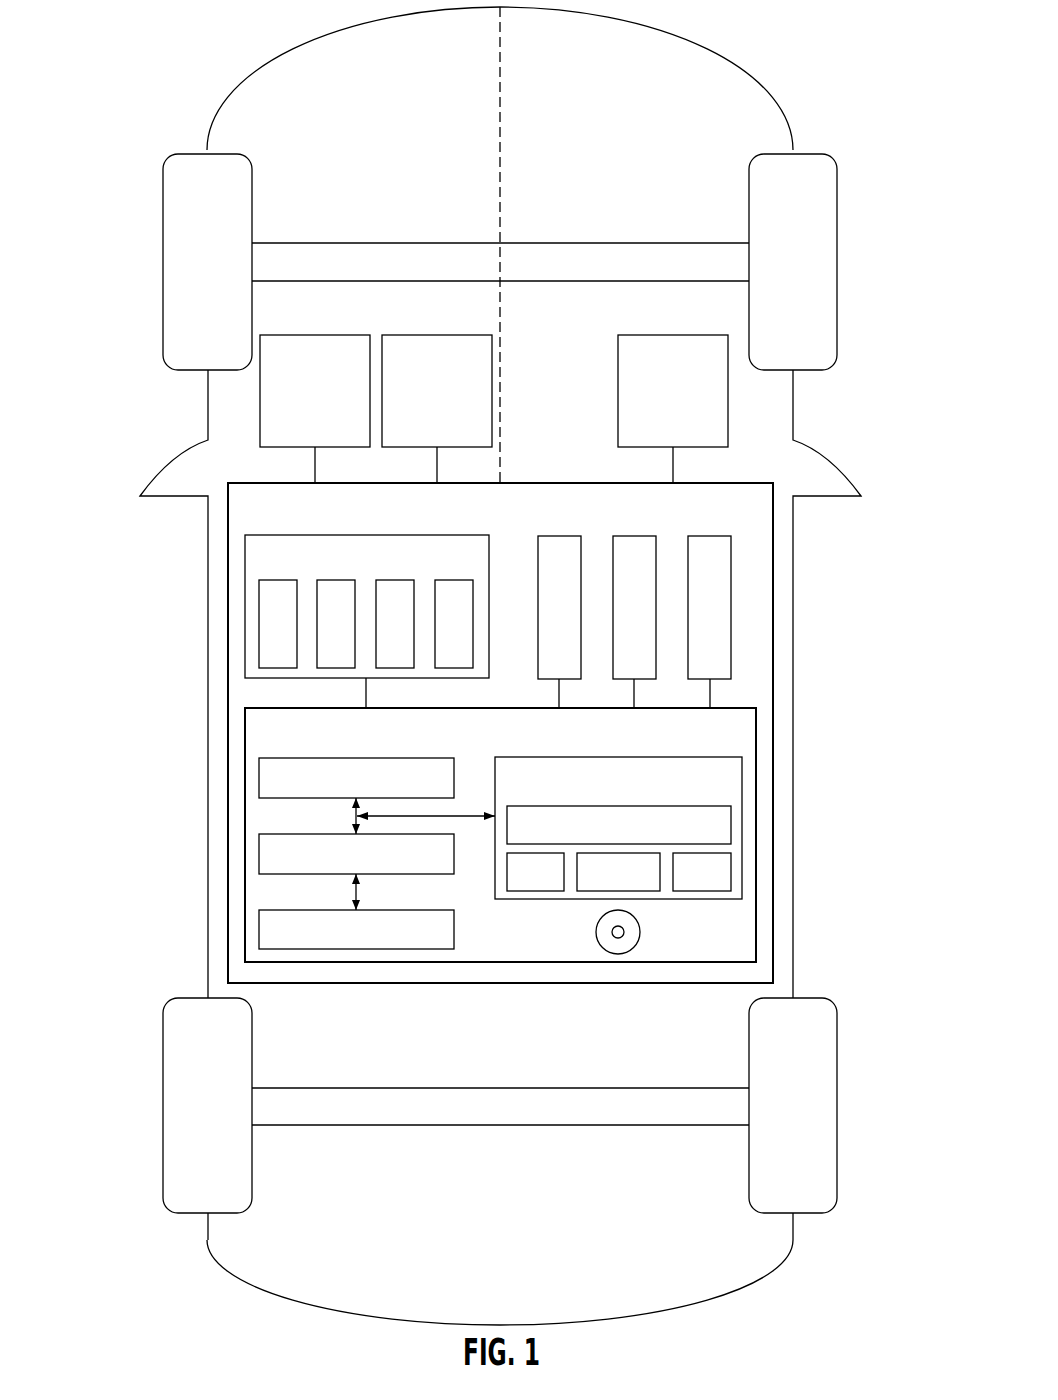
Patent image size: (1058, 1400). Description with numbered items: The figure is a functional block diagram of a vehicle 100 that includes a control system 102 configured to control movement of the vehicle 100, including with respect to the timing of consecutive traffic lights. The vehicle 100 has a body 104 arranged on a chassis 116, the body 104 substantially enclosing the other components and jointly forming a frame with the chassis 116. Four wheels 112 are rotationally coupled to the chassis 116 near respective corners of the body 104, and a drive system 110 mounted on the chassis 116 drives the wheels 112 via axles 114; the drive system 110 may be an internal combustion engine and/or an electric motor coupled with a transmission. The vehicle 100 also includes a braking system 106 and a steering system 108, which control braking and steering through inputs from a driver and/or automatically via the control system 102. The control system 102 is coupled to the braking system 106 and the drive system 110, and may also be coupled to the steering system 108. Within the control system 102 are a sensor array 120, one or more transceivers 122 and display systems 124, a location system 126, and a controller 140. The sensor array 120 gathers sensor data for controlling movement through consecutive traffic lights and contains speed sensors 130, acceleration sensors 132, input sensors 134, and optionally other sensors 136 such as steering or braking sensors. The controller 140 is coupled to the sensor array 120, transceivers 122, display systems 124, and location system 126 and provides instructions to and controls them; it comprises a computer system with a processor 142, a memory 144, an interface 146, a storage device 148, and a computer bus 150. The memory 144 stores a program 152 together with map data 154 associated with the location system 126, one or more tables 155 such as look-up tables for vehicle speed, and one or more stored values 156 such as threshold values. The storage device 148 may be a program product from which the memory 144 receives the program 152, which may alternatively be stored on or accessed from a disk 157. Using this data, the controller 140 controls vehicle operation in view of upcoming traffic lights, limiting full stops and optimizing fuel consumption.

The vehicle 100 is at (176, 30).
The control system 102 is at (540, 483).
The body 104 is at (208, 568).
The braking system 106 is at (290, 335).
The steering system 108 is at (408, 335).
The drive system 110 is at (655, 335).
The wheels 112 is at (178, 196).
The axles 114 is at (353, 252).
The chassis 116 is at (510, 89).
The sensor array 120 is at (310, 535).
The transceivers 122 is at (583, 560).
The display systems 124 is at (657, 560).
The location system 126 is at (731, 567).
The speed sensors 130 is at (259, 620).
The acceleration sensors 132 is at (317, 652).
The input sensors 134 is at (395, 668).
The other sensors 136 is at (473, 615).
The controller 140 is at (756, 708).
The processor 142 is at (259, 777).
The memory 144 is at (742, 772).
The interface 146 is at (259, 853).
The storage device 148 is at (259, 929).
The computer bus 150 is at (357, 816).
The program 152 is at (731, 825).
The map data 154 is at (535, 891).
The tables 155 is at (645, 891).
The stored values 156 is at (731, 873).
The disk 157 is at (618, 954).